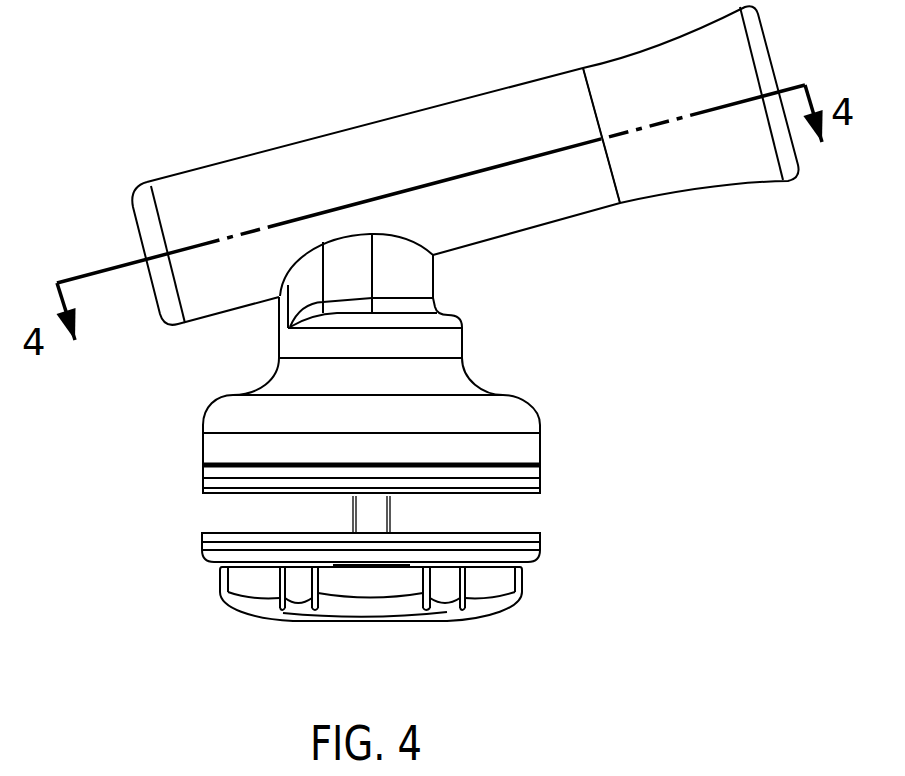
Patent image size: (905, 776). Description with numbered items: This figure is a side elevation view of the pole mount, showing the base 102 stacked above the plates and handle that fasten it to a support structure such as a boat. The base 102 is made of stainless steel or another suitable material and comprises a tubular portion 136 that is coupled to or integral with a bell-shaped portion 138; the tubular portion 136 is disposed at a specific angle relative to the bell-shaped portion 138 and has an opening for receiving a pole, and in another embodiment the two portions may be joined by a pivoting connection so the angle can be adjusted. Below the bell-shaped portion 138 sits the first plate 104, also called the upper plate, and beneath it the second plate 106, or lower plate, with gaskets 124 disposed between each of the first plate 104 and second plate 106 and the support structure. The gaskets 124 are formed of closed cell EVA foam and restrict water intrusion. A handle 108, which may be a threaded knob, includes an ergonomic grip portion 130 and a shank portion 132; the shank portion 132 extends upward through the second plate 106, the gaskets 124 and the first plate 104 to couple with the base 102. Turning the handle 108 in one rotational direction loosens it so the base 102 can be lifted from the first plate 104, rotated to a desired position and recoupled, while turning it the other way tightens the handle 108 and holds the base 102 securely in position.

The base 102 is at (300, 143).
The tubular portion 136 is at (447, 133).
The bell-shaped portion 138 is at (523, 420).
The first plate 104 is at (538, 475).
The gaskets or seals 124 is at (538, 494).
The shank portion 132 is at (368, 518).
The second plate 106 is at (200, 552).
The handle 108 is at (357, 612).
The grip portion 130 is at (267, 603).